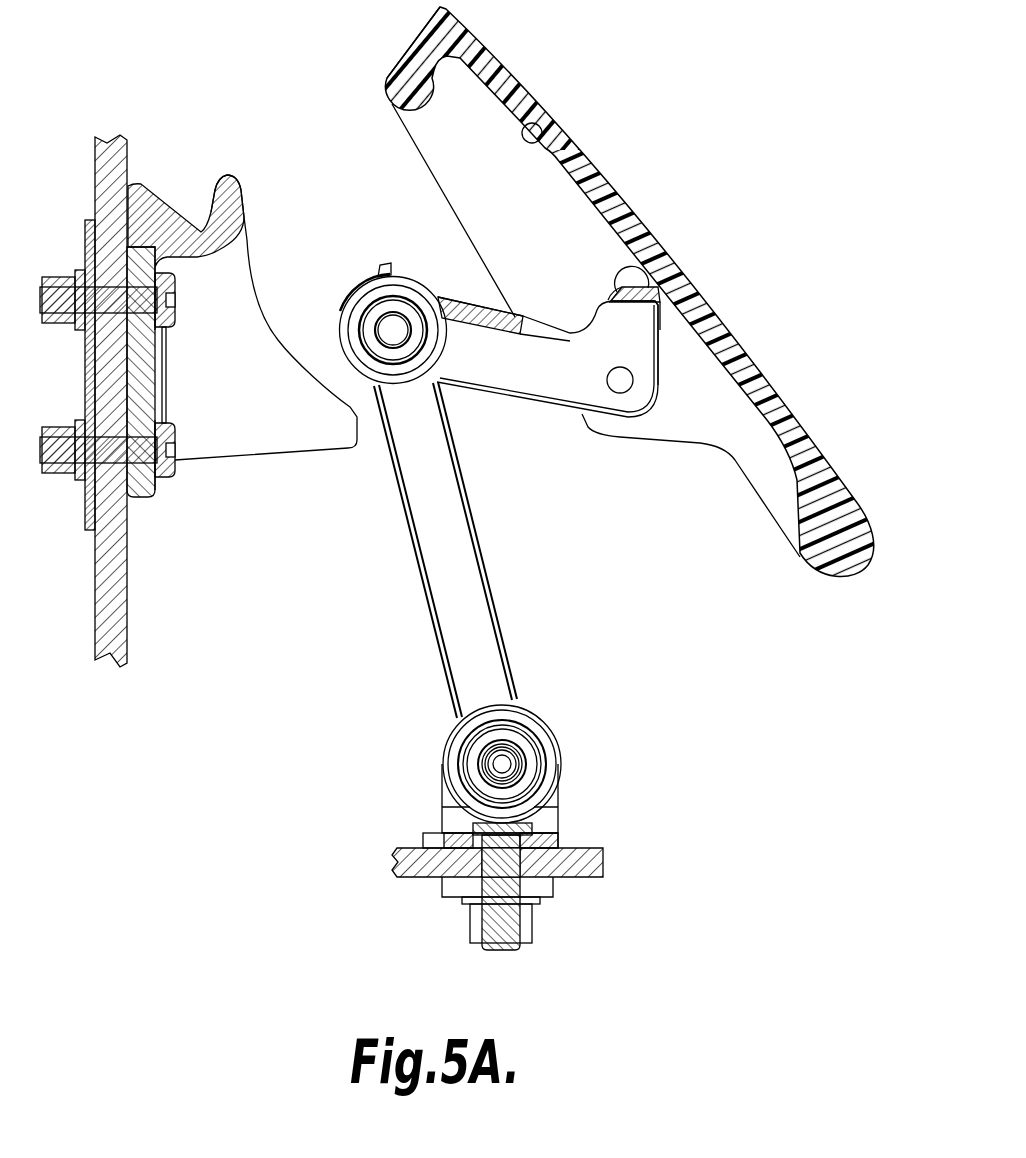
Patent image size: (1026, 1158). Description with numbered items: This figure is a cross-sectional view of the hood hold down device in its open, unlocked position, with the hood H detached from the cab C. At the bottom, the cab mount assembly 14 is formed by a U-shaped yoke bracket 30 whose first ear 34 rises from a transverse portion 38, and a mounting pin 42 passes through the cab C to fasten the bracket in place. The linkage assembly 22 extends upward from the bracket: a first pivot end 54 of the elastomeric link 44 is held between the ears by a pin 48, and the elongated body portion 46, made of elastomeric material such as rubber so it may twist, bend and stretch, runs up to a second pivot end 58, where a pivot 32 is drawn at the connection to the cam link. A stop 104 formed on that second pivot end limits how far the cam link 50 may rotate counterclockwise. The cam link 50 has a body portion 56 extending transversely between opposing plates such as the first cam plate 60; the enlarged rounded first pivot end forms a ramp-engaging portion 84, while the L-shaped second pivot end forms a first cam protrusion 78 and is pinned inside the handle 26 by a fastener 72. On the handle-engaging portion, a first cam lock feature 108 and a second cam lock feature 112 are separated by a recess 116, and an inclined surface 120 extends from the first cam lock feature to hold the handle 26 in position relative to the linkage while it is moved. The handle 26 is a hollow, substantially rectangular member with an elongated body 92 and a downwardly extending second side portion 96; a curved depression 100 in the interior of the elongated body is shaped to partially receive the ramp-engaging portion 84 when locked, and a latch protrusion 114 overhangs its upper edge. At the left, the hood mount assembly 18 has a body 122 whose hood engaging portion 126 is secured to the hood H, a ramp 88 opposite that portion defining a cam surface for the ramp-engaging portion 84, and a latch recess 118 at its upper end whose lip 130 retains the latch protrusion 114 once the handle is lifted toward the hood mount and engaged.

The hood H is at (100, 165).
The cab C is at (605, 862).
The cab mount assembly 14 is at (507, 801).
The hood mount assembly 18 is at (212, 163).
The linkage assembly 22 is at (380, 270).
The handle 26 is at (601, 292).
The yoke bracket 30 is at (434, 793).
The upper pivot pin 32 is at (393, 330).
The first ear 34 is at (553, 798).
The transverse portion 38 is at (553, 837).
The mounting pin 42 is at (480, 917).
The elastomeric link 44 is at (410, 550).
The elongated body portion 46 is at (487, 605).
The pin 48 is at (502, 764).
The cam link 50 is at (555, 356).
The first pivot end 54 is at (527, 730).
The body portion 56 is at (478, 312).
The second pivot end 58 is at (353, 308).
The first cam plate 60 is at (487, 373).
The fastener 72 is at (620, 387).
The first cam protrusion 78 is at (655, 355).
The ramp-engaging portion 84 is at (432, 303).
The ramp 88 is at (303, 355).
The elongated body 92 is at (718, 315).
The second side portion 96 is at (550, 215).
The curved depression 100 is at (532, 123).
The stop 104 is at (390, 268).
The first cam lock feature 108 is at (665, 283).
The second cam lock feature 112 is at (625, 268).
The latch protrusion 114 is at (395, 90).
The recess 116 is at (655, 290).
The latch recess 118 is at (210, 233).
The inclined surface 120 is at (684, 305).
The body 122 is at (210, 435).
The hood engaging portion 126 is at (137, 368).
The lip 130 is at (232, 180).